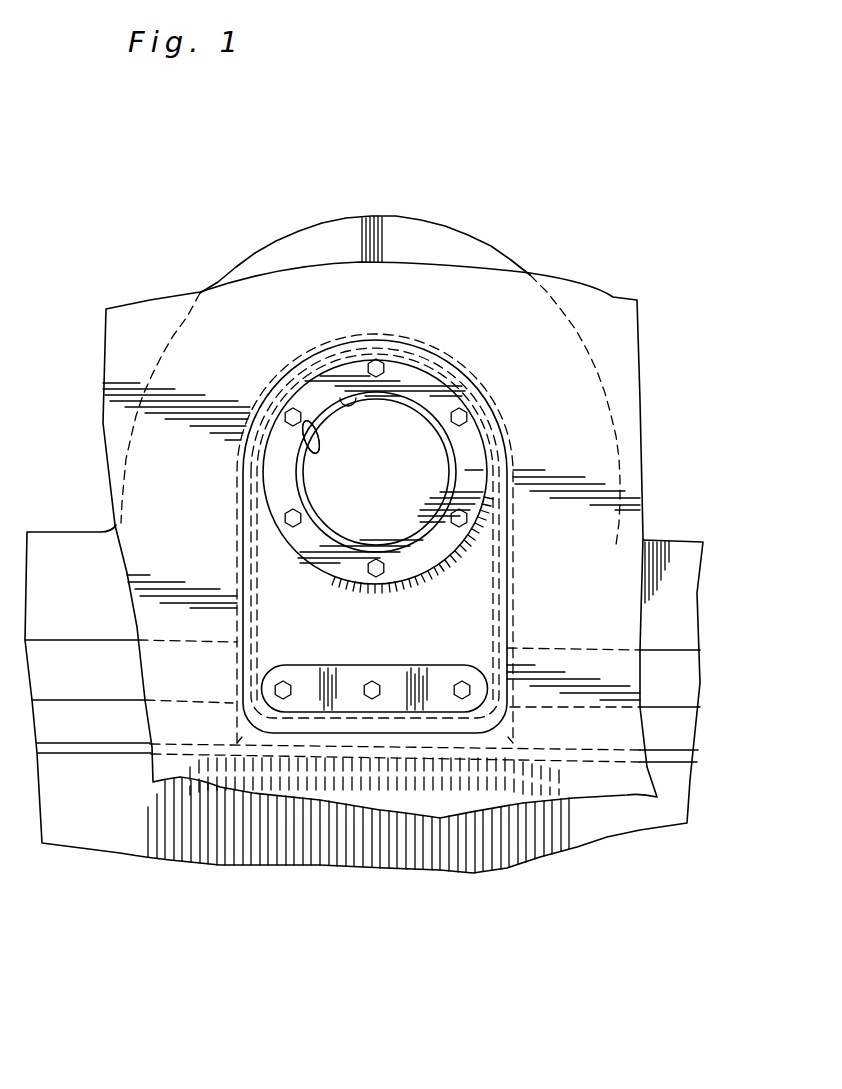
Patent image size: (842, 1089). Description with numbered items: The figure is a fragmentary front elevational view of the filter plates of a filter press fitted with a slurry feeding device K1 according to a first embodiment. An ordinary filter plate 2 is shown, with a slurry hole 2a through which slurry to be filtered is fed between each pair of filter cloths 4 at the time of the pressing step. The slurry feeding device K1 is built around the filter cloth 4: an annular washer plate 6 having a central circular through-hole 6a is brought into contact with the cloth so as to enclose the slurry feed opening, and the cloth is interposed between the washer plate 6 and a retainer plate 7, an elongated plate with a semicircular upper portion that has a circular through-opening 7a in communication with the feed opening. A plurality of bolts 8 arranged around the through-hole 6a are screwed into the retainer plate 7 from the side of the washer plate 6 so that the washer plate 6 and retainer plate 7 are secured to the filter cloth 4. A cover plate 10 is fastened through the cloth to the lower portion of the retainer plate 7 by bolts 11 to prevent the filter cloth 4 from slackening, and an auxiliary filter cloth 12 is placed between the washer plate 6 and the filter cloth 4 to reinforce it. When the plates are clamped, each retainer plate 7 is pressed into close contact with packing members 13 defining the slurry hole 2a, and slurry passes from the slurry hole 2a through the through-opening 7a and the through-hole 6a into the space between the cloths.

The ordinary filter plate 2 is at (672, 536).
The slurry hole 2a is at (345, 400).
The filter cloth 4 is at (637, 292).
The washer plate 6 is at (443, 392).
The through-hole 6a is at (320, 417).
The retainer plate 7 is at (437, 357).
The through-opening 7a is at (320, 417).
The bolts 8 is at (380, 365).
The cover plate 10 is at (318, 693).
The bolts 11 is at (377, 698).
The auxiliary filter cloth 12 is at (507, 590).
The packing members 13 is at (493, 403).
The slurry feeding device K1 is at (468, 465).